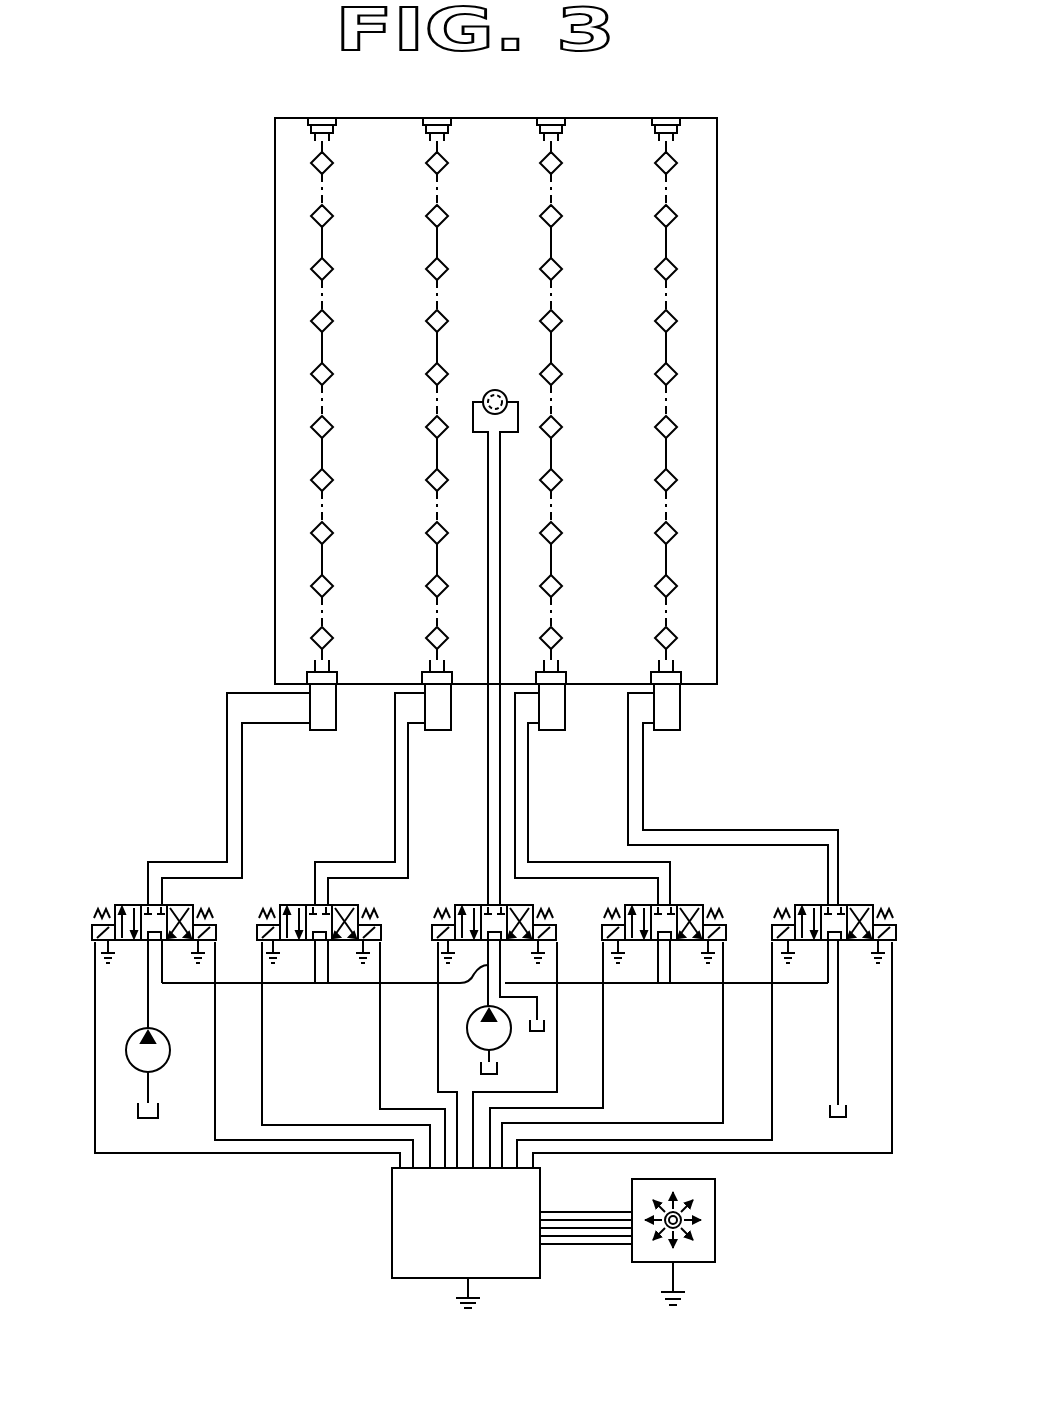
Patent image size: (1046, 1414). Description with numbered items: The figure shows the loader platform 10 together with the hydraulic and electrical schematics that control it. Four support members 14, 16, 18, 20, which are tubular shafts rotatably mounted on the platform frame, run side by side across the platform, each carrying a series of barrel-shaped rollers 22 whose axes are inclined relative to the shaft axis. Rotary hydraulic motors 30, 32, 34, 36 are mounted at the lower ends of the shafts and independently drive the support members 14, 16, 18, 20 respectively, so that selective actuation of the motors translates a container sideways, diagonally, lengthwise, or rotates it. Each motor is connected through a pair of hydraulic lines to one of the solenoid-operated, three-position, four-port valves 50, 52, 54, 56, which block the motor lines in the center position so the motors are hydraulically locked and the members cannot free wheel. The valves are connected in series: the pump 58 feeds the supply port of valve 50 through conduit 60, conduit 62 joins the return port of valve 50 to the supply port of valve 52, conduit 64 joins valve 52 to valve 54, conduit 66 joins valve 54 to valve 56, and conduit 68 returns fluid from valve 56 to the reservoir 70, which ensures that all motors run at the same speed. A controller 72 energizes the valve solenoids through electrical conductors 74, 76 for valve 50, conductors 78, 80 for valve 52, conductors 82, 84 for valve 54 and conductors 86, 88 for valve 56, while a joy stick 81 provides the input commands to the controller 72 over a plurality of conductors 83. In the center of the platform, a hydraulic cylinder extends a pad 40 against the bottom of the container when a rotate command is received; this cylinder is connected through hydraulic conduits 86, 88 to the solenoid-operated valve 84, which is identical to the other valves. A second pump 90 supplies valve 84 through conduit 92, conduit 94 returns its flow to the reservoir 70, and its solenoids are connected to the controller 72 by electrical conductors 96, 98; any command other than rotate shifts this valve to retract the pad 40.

The loader platform 10 is at (724, 208).
The support member 14 is at (331, 240).
The support member 16 is at (436, 300).
The support member 18 is at (562, 243).
The support member 20 is at (664, 300).
The rollers 22 is at (426, 164).
The rotary hydraulic motor 30 is at (325, 732).
The rotary hydraulic motor 32 is at (440, 732).
The rotary hydraulic motor 34 is at (556, 732).
The rotary hydraulic motor 36 is at (668, 732).
The pad 40 is at (495, 390).
The valve 50 is at (131, 902).
The valve 52 is at (303, 902).
The valve 54 is at (691, 902).
The valve 56 is at (863, 902).
The pump 58 is at (163, 1064).
The conduit 60 is at (150, 1000).
The conduit 62 is at (308, 984).
The conduit 64 is at (365, 985).
The conduit 66 is at (695, 985).
The conduit 68 is at (836, 1008).
The reservoir 70 is at (143, 1124).
The controller 72 is at (391, 1228).
The electrical conductor 74 is at (177, 1156).
The electrical conductor 76 is at (214, 1122).
The conductor 78 is at (263, 1058).
The conductor 80 is at (379, 1085).
The joy stick 81 is at (719, 1218).
The conductor 82 is at (604, 1088).
The conductors 83 is at (603, 1252).
The solenoid-operated valve 84 is at (476, 902).
The hydraulic conduit 86 is at (502, 452).
The hydraulic conduit 88 is at (487, 452).
The pump 90 is at (510, 1042).
The conduit 92 is at (486, 970).
The conduit 94 is at (540, 1012).
The electrical conductor 96 is at (437, 1043).
The electrical conductor 98 is at (557, 1064).